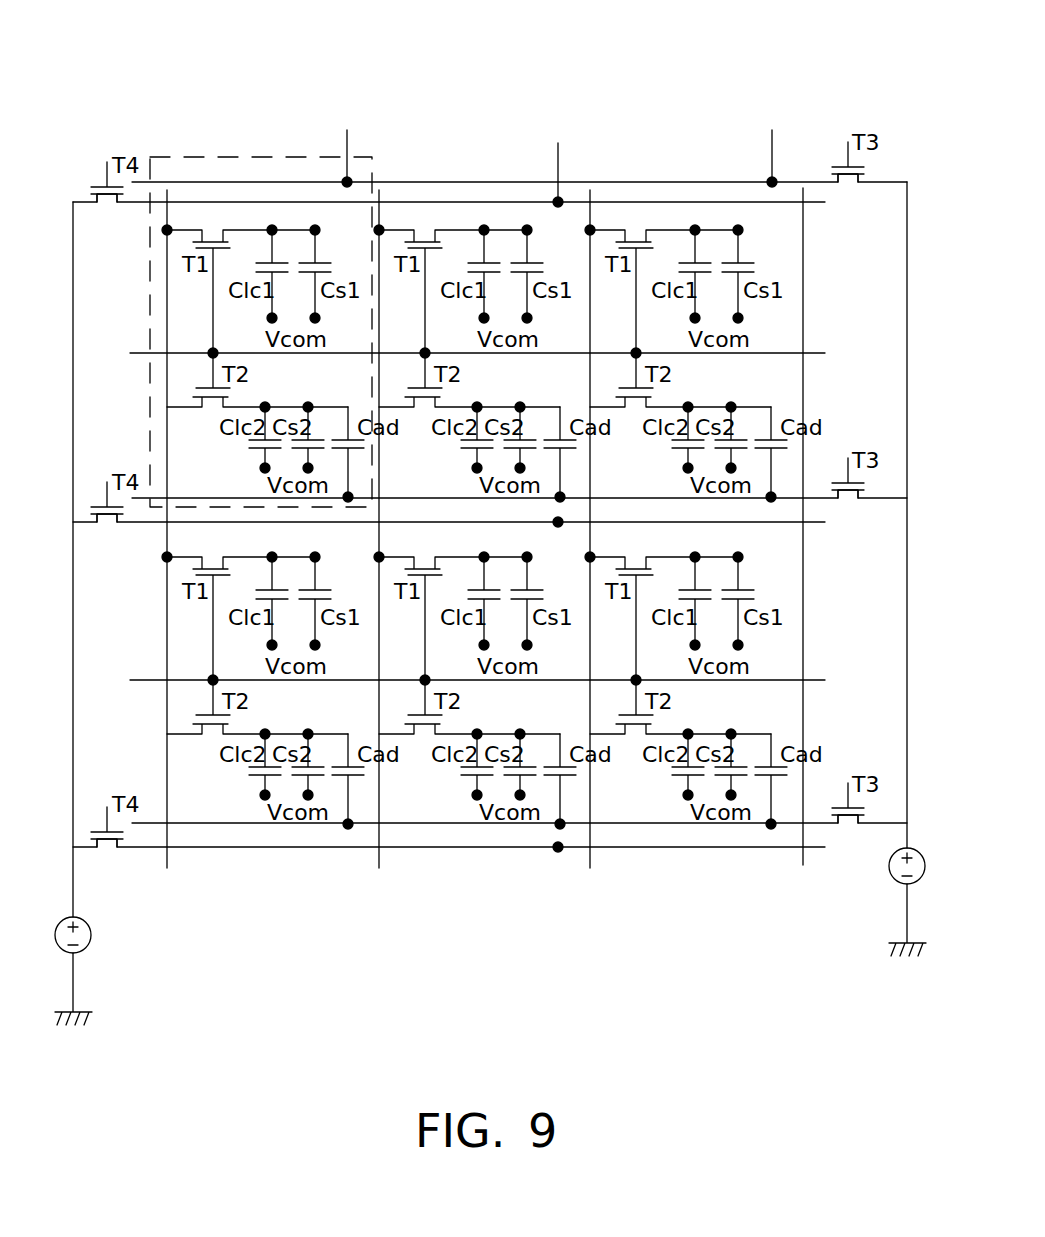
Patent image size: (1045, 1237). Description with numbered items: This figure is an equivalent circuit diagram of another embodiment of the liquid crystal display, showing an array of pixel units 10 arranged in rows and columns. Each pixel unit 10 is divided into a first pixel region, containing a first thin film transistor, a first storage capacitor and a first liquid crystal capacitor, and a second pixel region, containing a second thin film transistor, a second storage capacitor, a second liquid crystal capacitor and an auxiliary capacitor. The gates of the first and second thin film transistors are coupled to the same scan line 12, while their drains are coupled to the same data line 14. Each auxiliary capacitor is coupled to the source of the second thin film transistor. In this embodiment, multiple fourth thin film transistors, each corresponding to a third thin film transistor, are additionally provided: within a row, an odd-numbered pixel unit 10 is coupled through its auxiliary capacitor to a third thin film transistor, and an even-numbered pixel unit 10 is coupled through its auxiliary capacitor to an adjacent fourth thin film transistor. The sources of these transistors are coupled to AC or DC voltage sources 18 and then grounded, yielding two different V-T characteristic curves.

The pixel unit 10 is at (280, 141).
The scan line 12 is at (142, 353).
The data line 14 is at (167, 463).
The voltage source 18 is at (90, 935).